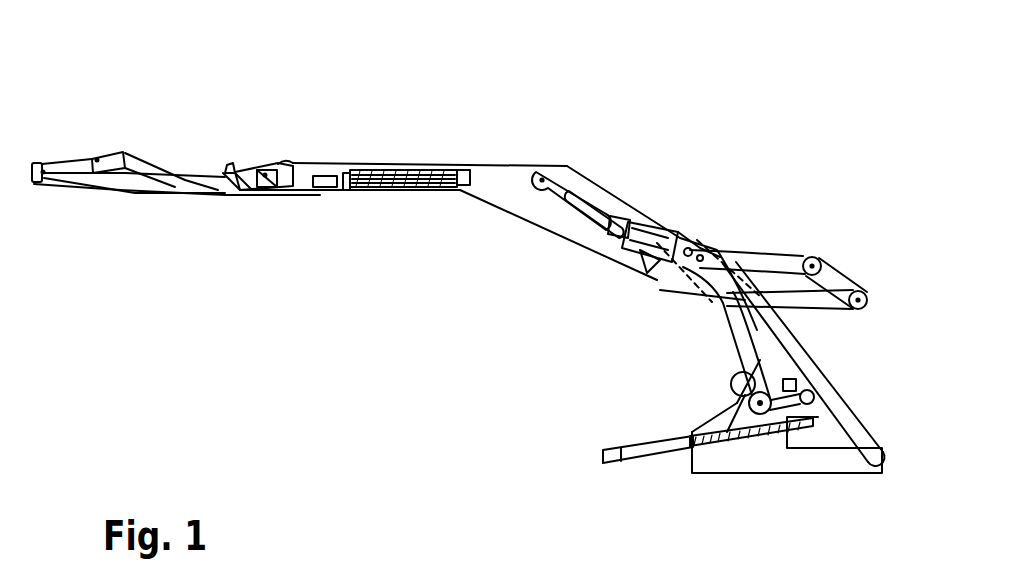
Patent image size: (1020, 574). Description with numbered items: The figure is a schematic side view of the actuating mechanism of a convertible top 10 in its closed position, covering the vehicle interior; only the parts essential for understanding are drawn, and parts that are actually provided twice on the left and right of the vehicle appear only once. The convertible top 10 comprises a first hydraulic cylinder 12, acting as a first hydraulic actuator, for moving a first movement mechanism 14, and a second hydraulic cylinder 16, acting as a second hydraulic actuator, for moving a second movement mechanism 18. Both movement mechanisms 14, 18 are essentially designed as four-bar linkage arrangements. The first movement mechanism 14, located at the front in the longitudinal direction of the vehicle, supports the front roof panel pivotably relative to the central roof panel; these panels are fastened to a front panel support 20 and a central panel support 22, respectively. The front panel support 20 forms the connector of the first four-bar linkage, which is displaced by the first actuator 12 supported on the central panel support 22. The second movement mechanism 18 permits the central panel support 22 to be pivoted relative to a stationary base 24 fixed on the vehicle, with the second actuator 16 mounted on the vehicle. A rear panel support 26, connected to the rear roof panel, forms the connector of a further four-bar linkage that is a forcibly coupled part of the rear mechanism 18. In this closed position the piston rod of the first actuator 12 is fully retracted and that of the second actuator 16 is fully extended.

The convertible top 10 is at (731, 96).
The first hydraulic cylinder 12 is at (410, 192).
The first movement mechanism 14 is at (151, 206).
The second hydraulic cylinder 16 is at (632, 462).
The second movement mechanism 18 is at (722, 327).
The front panel support 20 is at (82, 163).
The central panel support 22 is at (507, 177).
The stationary base 24 is at (770, 457).
The rear panel support 26 is at (830, 277).